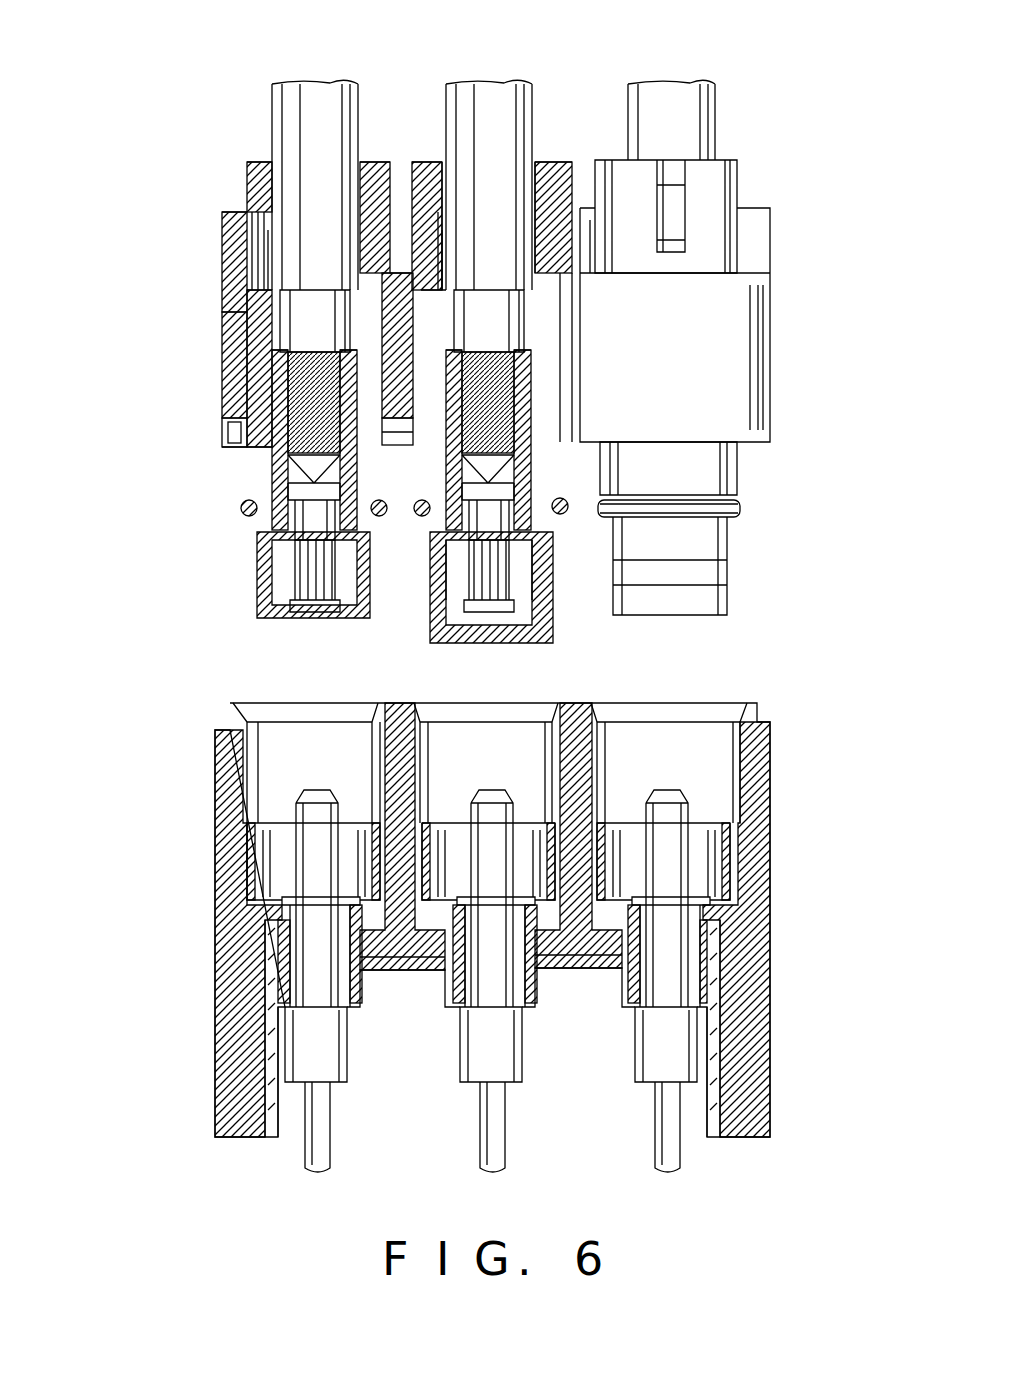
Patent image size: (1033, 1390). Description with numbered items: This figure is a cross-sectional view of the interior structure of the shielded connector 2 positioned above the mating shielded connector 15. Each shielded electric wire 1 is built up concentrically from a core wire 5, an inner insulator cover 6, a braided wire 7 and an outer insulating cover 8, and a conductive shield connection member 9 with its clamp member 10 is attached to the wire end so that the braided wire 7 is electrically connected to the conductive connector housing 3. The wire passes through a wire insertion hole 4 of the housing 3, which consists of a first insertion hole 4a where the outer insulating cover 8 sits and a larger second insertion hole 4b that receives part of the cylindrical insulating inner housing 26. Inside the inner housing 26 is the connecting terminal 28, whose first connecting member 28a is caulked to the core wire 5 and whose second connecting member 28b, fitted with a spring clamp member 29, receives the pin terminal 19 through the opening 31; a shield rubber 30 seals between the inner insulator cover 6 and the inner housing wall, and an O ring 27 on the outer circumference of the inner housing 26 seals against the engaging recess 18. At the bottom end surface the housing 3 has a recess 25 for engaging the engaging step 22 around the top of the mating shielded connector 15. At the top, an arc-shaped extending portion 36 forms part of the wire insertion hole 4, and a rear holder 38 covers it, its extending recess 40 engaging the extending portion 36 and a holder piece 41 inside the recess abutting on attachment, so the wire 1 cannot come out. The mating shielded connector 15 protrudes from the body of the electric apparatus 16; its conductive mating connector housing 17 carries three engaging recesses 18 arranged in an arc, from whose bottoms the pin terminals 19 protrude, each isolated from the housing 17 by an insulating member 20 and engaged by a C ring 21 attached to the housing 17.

The shielded electric wire 1 is at (264, 86).
The shielded connector 2 is at (785, 243).
The conductive connector housing 3 is at (755, 380).
The wire insertion hole 4 is at (222, 250).
The first insertion hole 4a is at (240, 212).
The second insertion hole 4b is at (222, 365).
The core wire 5 is at (520, 400).
The inner insulator cover 6 is at (300, 318).
The braided wire 7 is at (222, 285).
The outer insulating cover 8 is at (315, 110).
The shield connection member 9 is at (222, 270).
The clamp member 10 is at (430, 110).
The mating shielded connector 15 is at (787, 845).
The electric apparatus 16 is at (202, 870).
The mating connector housing 17 is at (215, 830).
The engaging recess 18 is at (262, 735).
The pin terminal 19 is at (308, 867).
The insulating member 20 is at (285, 905).
The C ring 21 is at (618, 983).
The engaging step 22 is at (760, 705).
The recess 25 is at (222, 432).
The inner housing 26 is at (237, 594).
The O ring 27 is at (236, 573).
The connecting terminal 28 is at (262, 505).
The first connecting member 28a is at (300, 483).
The second connecting member 28b is at (560, 545).
The spring clamp member 29 is at (330, 618).
The shield rubber 30 is at (540, 312).
The opening 31 is at (308, 618).
The extending portion 36 is at (737, 185).
The rear holder 38 is at (244, 150).
The extending recess 40 is at (398, 255).
The holder piece 41 is at (595, 162).